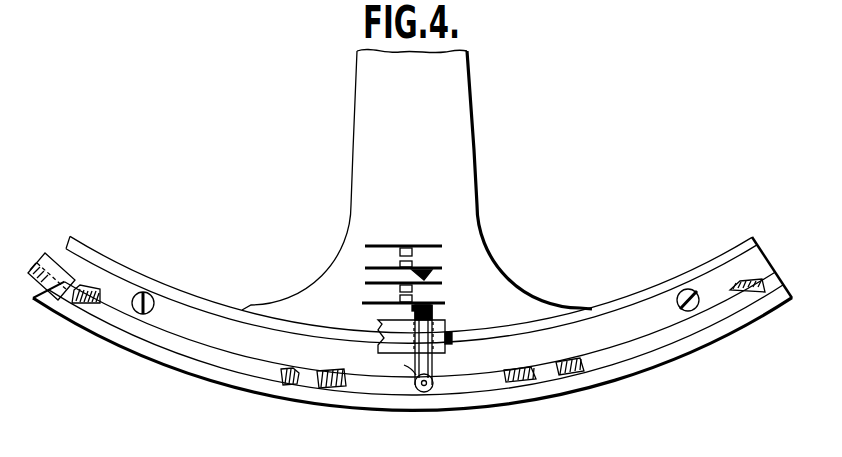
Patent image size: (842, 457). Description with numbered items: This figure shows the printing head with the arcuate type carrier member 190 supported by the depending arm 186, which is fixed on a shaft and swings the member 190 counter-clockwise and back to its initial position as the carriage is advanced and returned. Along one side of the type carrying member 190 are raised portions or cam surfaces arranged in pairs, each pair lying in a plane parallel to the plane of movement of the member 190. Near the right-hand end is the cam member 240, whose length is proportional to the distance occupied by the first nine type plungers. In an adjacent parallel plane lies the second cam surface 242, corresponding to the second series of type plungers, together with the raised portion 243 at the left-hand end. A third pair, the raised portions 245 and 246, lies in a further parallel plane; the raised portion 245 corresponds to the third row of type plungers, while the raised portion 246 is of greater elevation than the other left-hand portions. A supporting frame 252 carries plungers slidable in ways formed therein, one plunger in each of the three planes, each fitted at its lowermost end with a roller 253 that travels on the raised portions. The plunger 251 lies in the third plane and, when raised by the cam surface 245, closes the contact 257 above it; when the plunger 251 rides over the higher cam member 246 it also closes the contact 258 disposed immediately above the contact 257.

The depending arm 186 is at (463, 120).
The type carrier member 190 is at (663, 270).
The cam member 240 is at (609, 350).
The second cam surface 242 is at (352, 388).
The raised portion 243 is at (74, 292).
The raised portion 245 is at (166, 338).
The raised portion 246 is at (40, 267).
The plunger 251 is at (435, 362).
The supporting frame 252 is at (388, 327).
The roller 253 is at (415, 387).
The contact 257 is at (415, 291).
The contact 258 is at (413, 257).